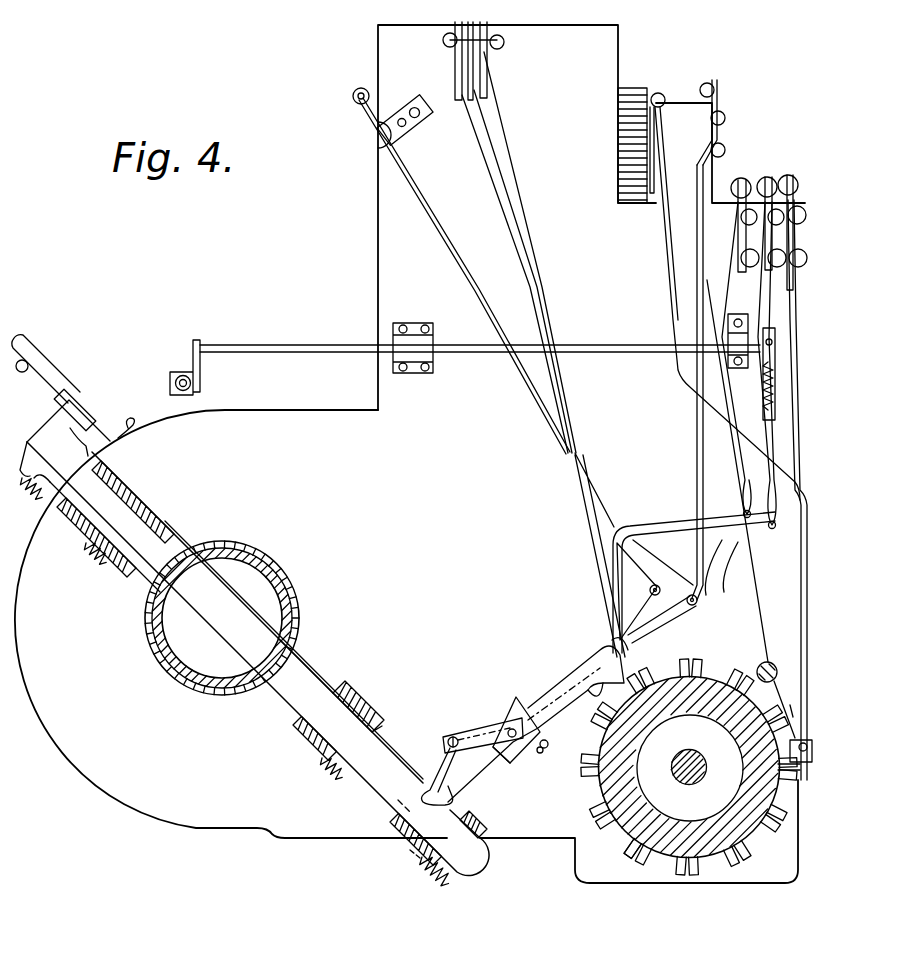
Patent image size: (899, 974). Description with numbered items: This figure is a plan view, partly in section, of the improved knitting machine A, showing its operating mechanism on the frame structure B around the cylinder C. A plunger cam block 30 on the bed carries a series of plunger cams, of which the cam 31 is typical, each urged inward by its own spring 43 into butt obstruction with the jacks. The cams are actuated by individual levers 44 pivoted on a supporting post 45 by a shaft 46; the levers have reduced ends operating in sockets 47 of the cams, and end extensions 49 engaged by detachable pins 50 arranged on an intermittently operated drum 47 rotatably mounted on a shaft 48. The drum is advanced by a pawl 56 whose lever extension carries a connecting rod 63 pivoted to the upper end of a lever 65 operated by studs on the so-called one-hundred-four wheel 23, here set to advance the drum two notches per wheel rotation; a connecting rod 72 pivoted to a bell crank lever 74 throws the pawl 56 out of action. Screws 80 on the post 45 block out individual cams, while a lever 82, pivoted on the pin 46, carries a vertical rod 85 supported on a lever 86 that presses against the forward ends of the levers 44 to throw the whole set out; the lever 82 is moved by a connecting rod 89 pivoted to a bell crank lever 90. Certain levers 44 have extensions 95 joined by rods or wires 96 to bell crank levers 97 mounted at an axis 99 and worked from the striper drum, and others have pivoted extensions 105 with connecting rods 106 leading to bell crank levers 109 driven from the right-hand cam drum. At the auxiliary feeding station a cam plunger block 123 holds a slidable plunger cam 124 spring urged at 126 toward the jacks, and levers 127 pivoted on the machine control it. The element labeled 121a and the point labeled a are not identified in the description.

The "104" gear 23 is at (636, 88).
The plunger cam block 30 is at (372, 700).
The plunger cam 31 is at (305, 680).
The spring 43 is at (330, 778).
The lever 44 is at (538, 700).
The supporting post 45 is at (517, 690).
The shaft 46 is at (505, 768).
The drum 47 is at (434, 770).
The shaft 48 is at (698, 778).
The end extension 49 is at (610, 682).
The pin 50 is at (640, 850).
The pawl 56 is at (795, 785).
The connecting rod 63 is at (668, 238).
The lever 65 is at (656, 152).
The connecting rod 72 is at (690, 282).
The bell crank lever 74 is at (718, 148).
The screw 80 is at (545, 754).
The lever 82 is at (660, 598).
The rod 85 is at (455, 736).
The lever 86 is at (478, 730).
The connecting rod 89 is at (445, 252).
The bell crank lever 90 is at (368, 115).
The extension 95 is at (624, 655).
The rod 96 is at (520, 218).
The bell crank lever 97 is at (458, 62).
The axis 99 is at (500, 44).
The lever extension 105 is at (684, 612).
The connecting rod 106 is at (762, 412).
The bell crank lever 109 is at (775, 282).
The shaft 121a is at (445, 350).
The cam plunger block 123 is at (156, 524).
The plunger cam 124 is at (163, 544).
The spring 126 is at (95, 560).
The lever 127 is at (50, 380).
The knitting machine A is at (183, 814).
The frame structure B is at (352, 838).
The cylinder C is at (216, 692).
The pin a is at (471, 742).